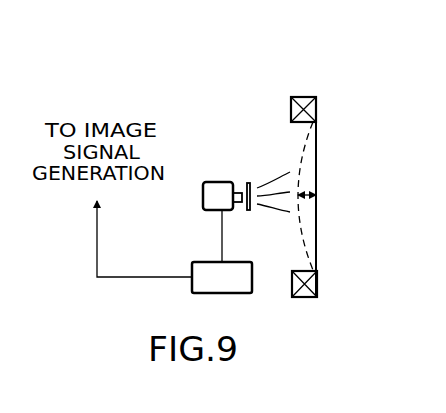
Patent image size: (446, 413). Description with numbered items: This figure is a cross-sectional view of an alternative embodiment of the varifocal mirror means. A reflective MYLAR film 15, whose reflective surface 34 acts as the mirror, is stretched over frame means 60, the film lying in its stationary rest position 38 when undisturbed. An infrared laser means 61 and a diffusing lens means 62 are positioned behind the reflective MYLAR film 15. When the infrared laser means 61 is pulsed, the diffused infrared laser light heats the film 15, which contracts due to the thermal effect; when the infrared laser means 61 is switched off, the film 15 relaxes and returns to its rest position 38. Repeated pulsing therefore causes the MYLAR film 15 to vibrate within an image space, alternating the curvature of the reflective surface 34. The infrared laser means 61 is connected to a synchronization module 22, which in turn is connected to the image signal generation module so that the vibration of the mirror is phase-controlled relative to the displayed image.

The reflective MYLAR film 15 is at (318, 137).
The synchronization module 22 is at (222, 251).
The reflective surface 34 is at (320, 163).
The rest position 38 is at (315, 94).
The frame means 60 is at (290, 95).
The infrared laser means 61 is at (220, 182).
The diffusing lens means 62 is at (250, 182).